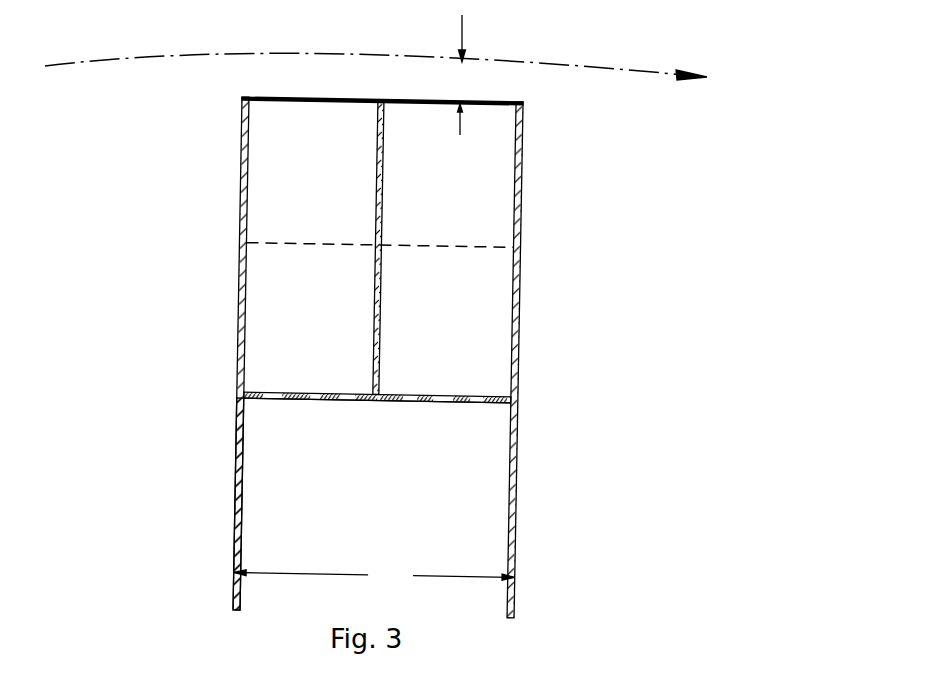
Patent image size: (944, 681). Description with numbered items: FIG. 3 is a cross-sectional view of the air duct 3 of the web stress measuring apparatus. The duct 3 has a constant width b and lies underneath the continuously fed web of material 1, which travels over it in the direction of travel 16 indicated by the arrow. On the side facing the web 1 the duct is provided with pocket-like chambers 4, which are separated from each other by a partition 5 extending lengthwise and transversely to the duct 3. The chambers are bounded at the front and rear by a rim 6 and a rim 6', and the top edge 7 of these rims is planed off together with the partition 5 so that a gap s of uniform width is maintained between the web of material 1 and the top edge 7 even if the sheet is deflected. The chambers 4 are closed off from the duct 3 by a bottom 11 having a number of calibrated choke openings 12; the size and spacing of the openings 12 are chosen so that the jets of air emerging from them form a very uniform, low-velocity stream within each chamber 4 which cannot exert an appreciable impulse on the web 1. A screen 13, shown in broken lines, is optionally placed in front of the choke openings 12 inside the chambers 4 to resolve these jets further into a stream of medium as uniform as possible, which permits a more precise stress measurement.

The web of material 1 is at (293, 52).
The air duct 3 is at (262, 465).
The pocket-like chambers 4 is at (413, 118).
The partition 5 is at (378, 178).
The front rim 6 is at (228, 353).
The rear rim 6' is at (530, 360).
The top edge 7 is at (330, 99).
The bottom 11 is at (461, 396).
The choke openings 12 is at (442, 401).
The screen 13 is at (493, 246).
The direction of travel 16 is at (676, 72).
The gap s is at (459, 75).
The width b is at (374, 576).